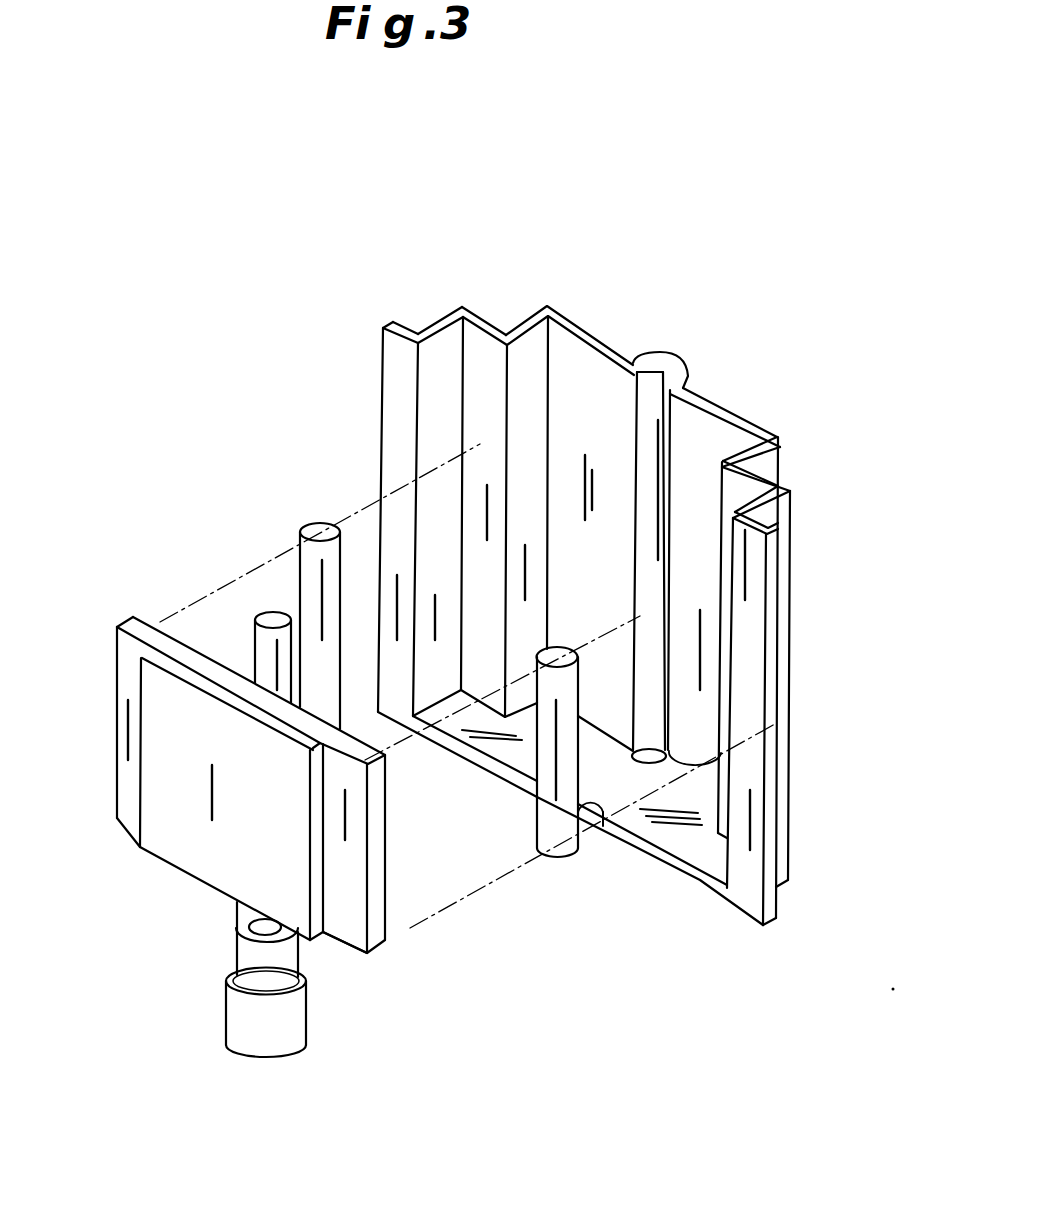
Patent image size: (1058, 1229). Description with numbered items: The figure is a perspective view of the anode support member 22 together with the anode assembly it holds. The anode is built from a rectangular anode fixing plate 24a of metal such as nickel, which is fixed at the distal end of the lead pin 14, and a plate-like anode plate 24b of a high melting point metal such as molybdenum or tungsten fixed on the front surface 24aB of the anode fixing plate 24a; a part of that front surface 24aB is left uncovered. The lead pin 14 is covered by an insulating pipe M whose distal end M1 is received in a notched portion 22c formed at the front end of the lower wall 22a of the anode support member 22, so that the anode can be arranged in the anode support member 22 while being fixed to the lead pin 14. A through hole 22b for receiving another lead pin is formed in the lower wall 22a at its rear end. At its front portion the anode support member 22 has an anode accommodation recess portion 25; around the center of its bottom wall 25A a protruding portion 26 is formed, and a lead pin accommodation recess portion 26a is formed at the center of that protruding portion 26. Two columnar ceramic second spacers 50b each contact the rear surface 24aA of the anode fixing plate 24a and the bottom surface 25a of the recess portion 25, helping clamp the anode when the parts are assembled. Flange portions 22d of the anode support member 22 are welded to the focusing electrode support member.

The lead pin 14 is at (267, 610).
The anode support member 22 is at (812, 591).
The lower wall 22a is at (700, 850).
The through hole 22b is at (722, 750).
The notched portion 22c is at (588, 818).
The flange portions 22d is at (393, 407).
The anode fixing plate 24a is at (373, 940).
The rear surface of the anode fixing plate 24aA is at (195, 648).
The front surface of the anode fixing plate 24aB is at (345, 930).
The anode plate 24b is at (193, 818).
The anode accommodation recess portion 25 is at (530, 493).
The bottom wall 25A is at (478, 370).
The bottom surface of the anode accommodation recess portion 25a is at (477, 373).
The protruding portion 26 is at (730, 433).
The lead pin accommodation recess portion 26a is at (653, 385).
The second spacers 50b is at (306, 520).
The insulating pipe M is at (247, 1025).
The distal end of the insulating pipe M1 is at (250, 958).